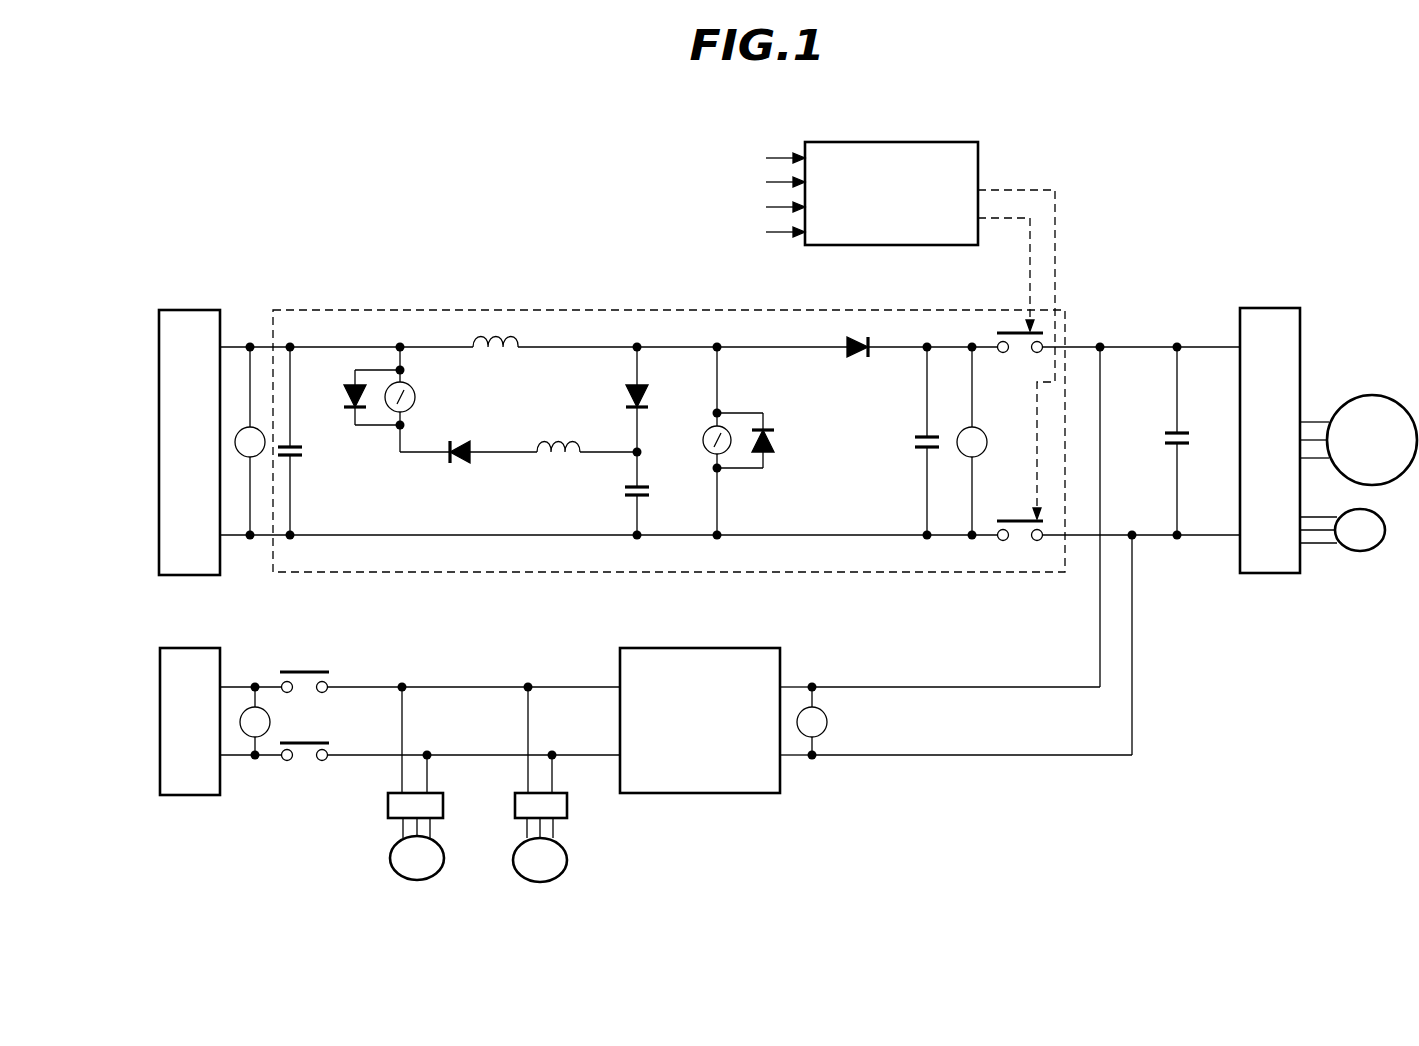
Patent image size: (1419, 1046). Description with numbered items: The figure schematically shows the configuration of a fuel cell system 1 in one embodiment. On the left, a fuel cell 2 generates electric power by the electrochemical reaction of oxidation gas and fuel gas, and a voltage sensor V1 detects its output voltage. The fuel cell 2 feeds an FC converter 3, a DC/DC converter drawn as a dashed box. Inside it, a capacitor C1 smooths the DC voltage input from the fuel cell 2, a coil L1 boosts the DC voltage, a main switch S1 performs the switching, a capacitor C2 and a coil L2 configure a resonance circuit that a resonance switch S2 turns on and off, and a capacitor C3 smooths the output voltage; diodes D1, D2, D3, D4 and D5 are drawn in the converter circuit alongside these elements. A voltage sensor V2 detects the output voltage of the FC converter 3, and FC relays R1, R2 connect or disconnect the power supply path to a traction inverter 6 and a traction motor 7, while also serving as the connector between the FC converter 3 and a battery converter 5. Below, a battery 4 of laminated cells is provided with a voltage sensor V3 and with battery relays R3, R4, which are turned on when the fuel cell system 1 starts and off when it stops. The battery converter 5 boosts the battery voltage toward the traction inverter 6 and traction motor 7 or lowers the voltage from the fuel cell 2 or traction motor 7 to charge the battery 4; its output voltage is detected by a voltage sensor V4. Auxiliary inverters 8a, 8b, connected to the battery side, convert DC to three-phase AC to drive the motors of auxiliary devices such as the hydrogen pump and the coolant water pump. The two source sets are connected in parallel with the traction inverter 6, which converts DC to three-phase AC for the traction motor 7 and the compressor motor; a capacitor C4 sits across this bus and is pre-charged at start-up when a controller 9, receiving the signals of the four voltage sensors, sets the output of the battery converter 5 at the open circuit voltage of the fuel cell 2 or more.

The fuel cell system 1 is at (462, 192).
The fuel cell 2 is at (190, 310).
The FC converter 3 is at (578, 310).
The battery 4 is at (192, 795).
The Bat converter 5 is at (720, 793).
The traction inverter 6 is at (1272, 308).
The traction motor 7 is at (1365, 395).
The auxiliary inverter 8a is at (443, 805).
The auxiliary inverter 8b is at (567, 806).
The controller 9 is at (937, 142).
The capacitor C1 is at (300, 458).
The capacitor C2 is at (650, 498).
The capacitor C3 is at (922, 445).
The capacitor C4 is at (1165, 447).
The diode D1 is at (343, 395).
The diode D2 is at (460, 465).
The diode D3 is at (630, 395).
The diode D4 is at (775, 440).
The diode D5 is at (855, 355).
The coil L1 is at (490, 356).
The coil L2 is at (552, 462).
The main switch S1 is at (712, 430).
The resonance switch S2 is at (417, 395).
The FC relay R1 is at (1013, 330).
The FC relay R2 is at (1022, 540).
The Bat relay R3 is at (300, 670).
The Bat relay R4 is at (303, 760).
The voltage sensor V1 is at (248, 457).
The voltage sensor V2 is at (968, 428).
The voltage sensor V3 is at (270, 722).
The voltage sensor V4 is at (828, 722).